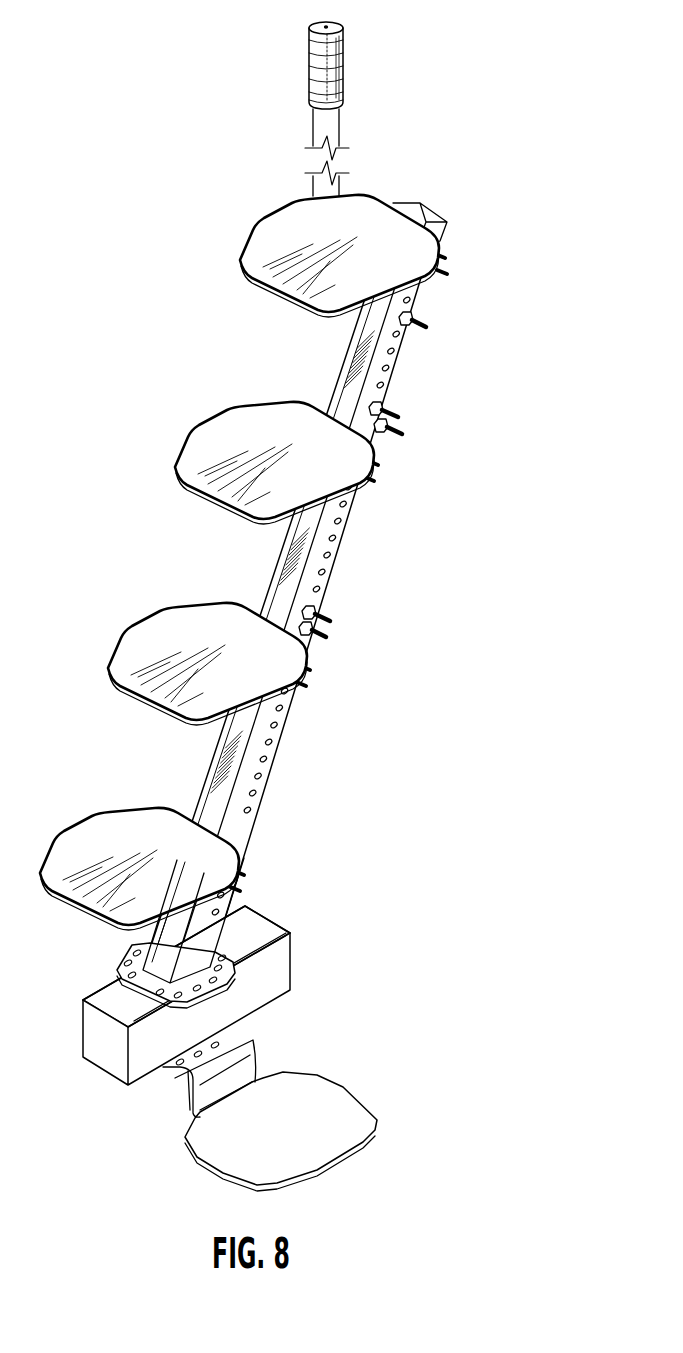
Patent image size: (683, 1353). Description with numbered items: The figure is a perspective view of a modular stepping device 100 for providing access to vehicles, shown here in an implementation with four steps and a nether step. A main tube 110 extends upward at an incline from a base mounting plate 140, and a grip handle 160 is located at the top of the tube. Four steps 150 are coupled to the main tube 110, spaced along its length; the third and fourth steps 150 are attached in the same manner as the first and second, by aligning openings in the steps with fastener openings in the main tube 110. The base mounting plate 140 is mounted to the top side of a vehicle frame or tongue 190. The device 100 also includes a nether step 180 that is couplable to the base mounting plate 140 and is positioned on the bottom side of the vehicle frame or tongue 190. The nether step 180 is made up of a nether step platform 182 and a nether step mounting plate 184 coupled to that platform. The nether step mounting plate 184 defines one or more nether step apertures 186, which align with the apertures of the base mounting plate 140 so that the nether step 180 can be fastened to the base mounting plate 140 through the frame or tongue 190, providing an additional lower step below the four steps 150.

The modular stepping device 100 is at (273, 625).
The main tube 110 is at (424, 368).
The base mounting plate 140 is at (110, 960).
The step 150 is at (258, 212).
The grip handle 160 is at (276, 107).
The nether step 180 is at (258, 1129).
The nether step platform 182 is at (341, 1106).
The nether step mounting plate 184 is at (178, 1083).
The nether step apertures 186 is at (220, 1045).
The vehicle frame or tongue 190 is at (70, 1048).